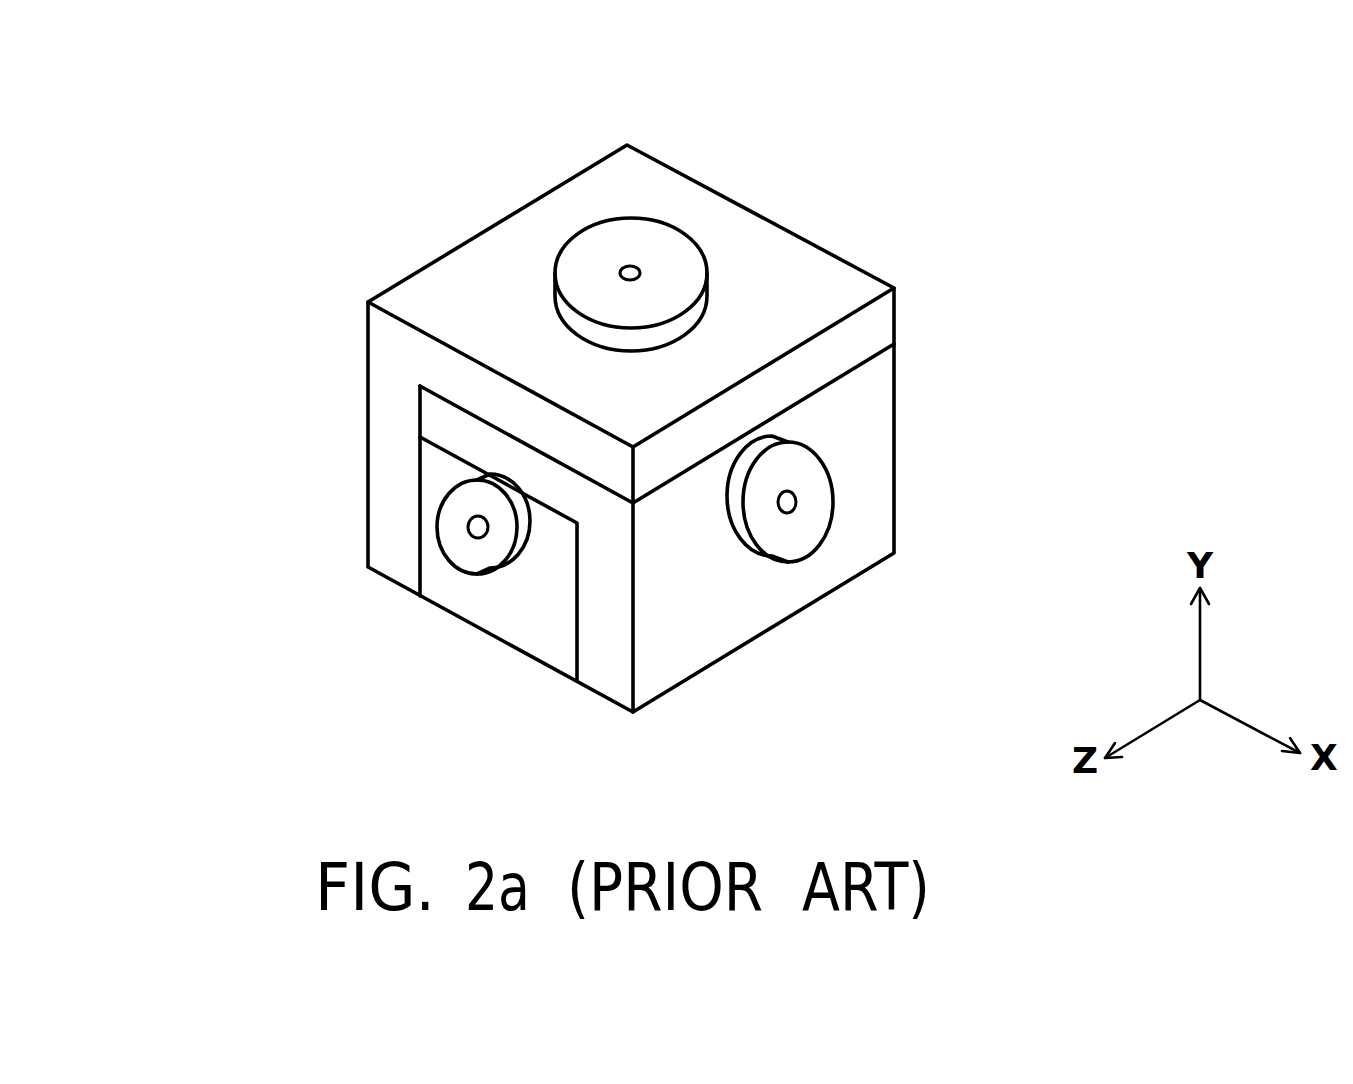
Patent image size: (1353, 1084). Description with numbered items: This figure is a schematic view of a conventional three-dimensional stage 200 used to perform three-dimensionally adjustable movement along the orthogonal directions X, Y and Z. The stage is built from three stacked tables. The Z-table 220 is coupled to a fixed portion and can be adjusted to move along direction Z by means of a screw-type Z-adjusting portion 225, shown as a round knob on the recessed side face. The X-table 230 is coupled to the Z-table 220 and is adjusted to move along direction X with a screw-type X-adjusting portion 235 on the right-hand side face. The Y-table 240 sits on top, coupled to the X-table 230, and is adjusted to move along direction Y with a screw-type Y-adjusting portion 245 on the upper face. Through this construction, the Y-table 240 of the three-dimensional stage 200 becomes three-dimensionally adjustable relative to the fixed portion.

The three-dimensional stage 200 is at (165, 111).
The Z-table 220 is at (545, 627).
The Z-adjusting portion 225 is at (478, 558).
The X-table 230 is at (792, 600).
The X-adjusting portion 235 is at (817, 487).
The Y-table 240 is at (823, 268).
The Y-adjusting portion 245 is at (660, 243).